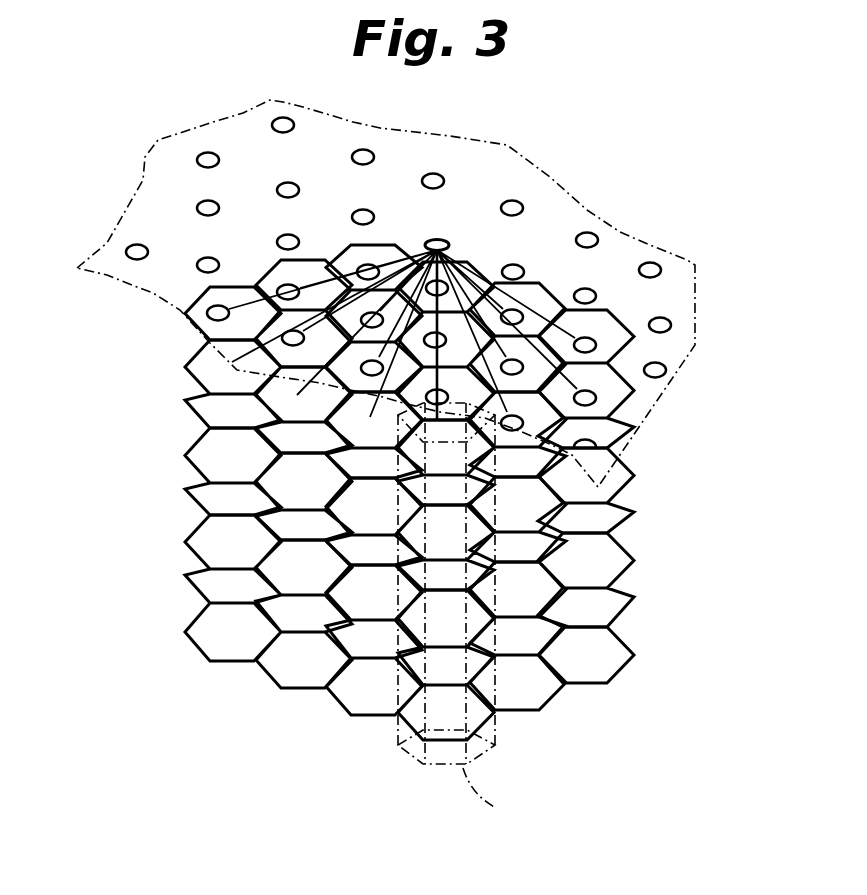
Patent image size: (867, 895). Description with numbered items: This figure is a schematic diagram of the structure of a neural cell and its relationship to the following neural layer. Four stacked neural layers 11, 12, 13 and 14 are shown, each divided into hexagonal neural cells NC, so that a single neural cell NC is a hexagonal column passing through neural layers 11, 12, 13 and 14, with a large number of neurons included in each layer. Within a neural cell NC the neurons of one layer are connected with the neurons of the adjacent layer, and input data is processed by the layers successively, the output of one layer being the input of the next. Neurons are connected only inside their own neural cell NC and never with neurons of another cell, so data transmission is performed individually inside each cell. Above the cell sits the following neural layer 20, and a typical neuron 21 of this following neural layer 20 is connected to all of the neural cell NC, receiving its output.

The neural layer 11 is at (633, 612).
The neural layer 12 is at (633, 530).
The neural layer 13 is at (633, 463).
The neural layer 14 is at (634, 345).
The following neural layer 20 is at (706, 301).
The neuron 21 is at (438, 240).
The neural cell NC is at (460, 620).